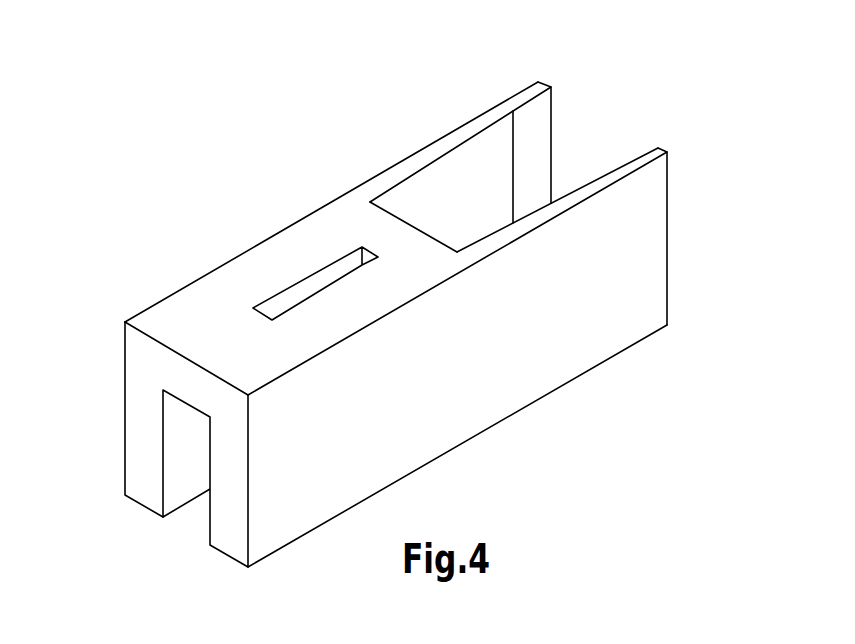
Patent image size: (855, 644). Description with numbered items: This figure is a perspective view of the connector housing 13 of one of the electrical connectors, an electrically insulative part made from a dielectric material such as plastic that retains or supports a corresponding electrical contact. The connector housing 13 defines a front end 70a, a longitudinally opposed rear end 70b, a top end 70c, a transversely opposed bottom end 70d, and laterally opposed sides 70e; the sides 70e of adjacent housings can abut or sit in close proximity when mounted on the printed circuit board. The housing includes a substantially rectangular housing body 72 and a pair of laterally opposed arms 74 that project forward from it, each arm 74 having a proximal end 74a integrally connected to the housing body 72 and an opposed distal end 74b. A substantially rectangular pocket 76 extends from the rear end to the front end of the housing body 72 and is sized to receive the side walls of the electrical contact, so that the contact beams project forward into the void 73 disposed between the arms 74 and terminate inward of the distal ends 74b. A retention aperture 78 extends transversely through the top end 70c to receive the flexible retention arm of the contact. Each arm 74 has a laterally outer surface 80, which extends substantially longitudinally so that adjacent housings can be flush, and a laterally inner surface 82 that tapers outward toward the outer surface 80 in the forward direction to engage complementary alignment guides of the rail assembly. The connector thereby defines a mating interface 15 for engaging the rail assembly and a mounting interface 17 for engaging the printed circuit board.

The connector housing 13 is at (192, 243).
The mating interface 15 is at (598, 133).
The mounting interface 17 is at (468, 473).
The front end 70a is at (622, 147).
The rear end 70b is at (145, 412).
The top end 70c is at (240, 288).
The bottom end 70d is at (302, 535).
The sides 70e is at (163, 300).
The housing body 72 is at (320, 243).
The void 73 is at (550, 147).
The arm 74 is at (412, 155).
The proximal end 74a is at (368, 186).
The distal end 74b is at (536, 82).
The pocket 76 is at (188, 526).
The retention aperture 78 is at (272, 297).
The outer surface 80 is at (450, 132).
The inner surface 82 is at (480, 166).